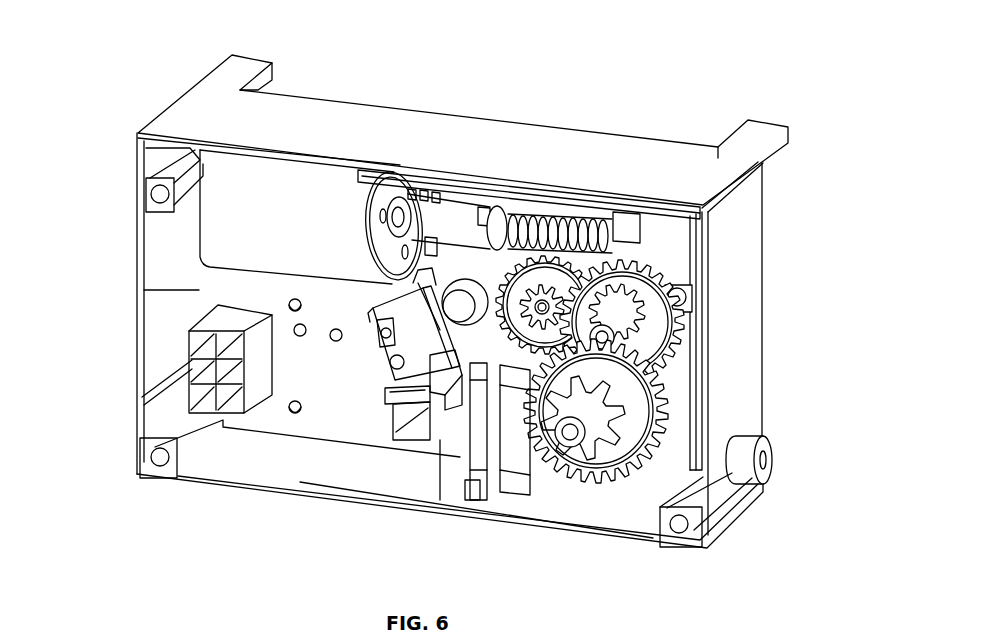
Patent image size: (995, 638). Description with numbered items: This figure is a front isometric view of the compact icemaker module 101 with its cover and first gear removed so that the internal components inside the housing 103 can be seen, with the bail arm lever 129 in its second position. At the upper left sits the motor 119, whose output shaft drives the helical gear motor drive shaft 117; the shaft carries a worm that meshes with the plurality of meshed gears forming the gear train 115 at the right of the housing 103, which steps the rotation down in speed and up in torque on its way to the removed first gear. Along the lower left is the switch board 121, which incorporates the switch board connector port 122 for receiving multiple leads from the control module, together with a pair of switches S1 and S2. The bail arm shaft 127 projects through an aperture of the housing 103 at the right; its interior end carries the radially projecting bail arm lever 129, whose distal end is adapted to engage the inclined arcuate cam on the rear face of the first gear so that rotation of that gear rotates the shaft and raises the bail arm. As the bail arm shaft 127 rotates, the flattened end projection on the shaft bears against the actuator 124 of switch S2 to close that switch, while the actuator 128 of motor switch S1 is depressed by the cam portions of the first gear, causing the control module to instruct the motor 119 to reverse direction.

The compact icemaker module 101 is at (145, 85).
The housing 103 is at (763, 258).
The gear train 115 is at (665, 403).
The motor drive shaft 117 is at (465, 203).
The motor 119 is at (198, 218).
The switch board 121 is at (192, 291).
The switch board connector port 122 is at (188, 348).
The actuator of switch S2 124 is at (428, 380).
The bail arm shaft 127 is at (766, 437).
The actuator of switch S1 128 is at (408, 200).
The bail arm lever 129 is at (447, 405).
The motor switch S1 is at (388, 345).
The switch S2 is at (390, 400).